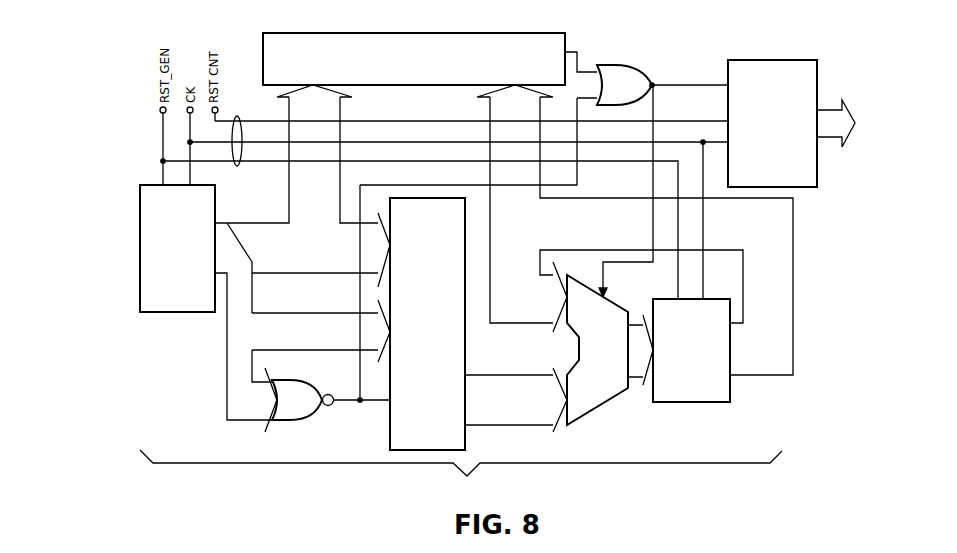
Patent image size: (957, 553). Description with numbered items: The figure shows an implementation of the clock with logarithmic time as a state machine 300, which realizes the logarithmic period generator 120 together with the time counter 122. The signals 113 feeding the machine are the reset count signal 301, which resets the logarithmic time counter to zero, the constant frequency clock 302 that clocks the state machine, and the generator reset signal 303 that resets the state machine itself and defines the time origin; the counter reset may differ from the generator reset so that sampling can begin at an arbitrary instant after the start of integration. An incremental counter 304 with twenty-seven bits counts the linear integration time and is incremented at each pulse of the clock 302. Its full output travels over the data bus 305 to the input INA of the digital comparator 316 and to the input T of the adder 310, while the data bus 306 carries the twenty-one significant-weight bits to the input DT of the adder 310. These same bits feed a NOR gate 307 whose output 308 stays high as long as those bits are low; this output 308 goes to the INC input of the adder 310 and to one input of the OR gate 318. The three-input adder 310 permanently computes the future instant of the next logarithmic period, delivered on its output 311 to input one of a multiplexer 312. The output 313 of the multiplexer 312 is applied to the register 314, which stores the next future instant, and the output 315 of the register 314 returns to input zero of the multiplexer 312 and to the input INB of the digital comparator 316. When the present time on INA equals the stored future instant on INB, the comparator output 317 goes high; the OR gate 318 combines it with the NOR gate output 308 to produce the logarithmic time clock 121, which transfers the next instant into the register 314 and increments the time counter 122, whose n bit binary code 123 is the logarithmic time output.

The signals 113 is at (238, 166).
The logarithmic period generator 120 is at (461, 475).
The clock INC2 121 is at (680, 68).
The time counter 122 is at (756, 60).
The n bit binary code 123 is at (841, 148).
The state machine 300 is at (180, 378).
The signal RST_CNT 301 is at (471, 114).
The clock CK 302 is at (458, 134).
The RST_GEN signal 303 is at (419, 221).
The incremental counter 304 is at (170, 313).
The data bus 305 is at (342, 99).
The data bus 306 is at (300, 313).
The NOR gate 307 is at (285, 421).
The output INC1 308 is at (358, 417).
The adder 310 is at (465, 343).
The output of the adder 311 is at (480, 428).
The multiplexer 312 is at (597, 408).
The output of the multiplexer 313 is at (650, 322).
The register 314 is at (695, 403).
The output of the register 315 is at (490, 98).
The digital comparator 316 is at (418, 32).
The output of the digital comparator 317 is at (580, 54).
The OR gate 318 is at (627, 66).